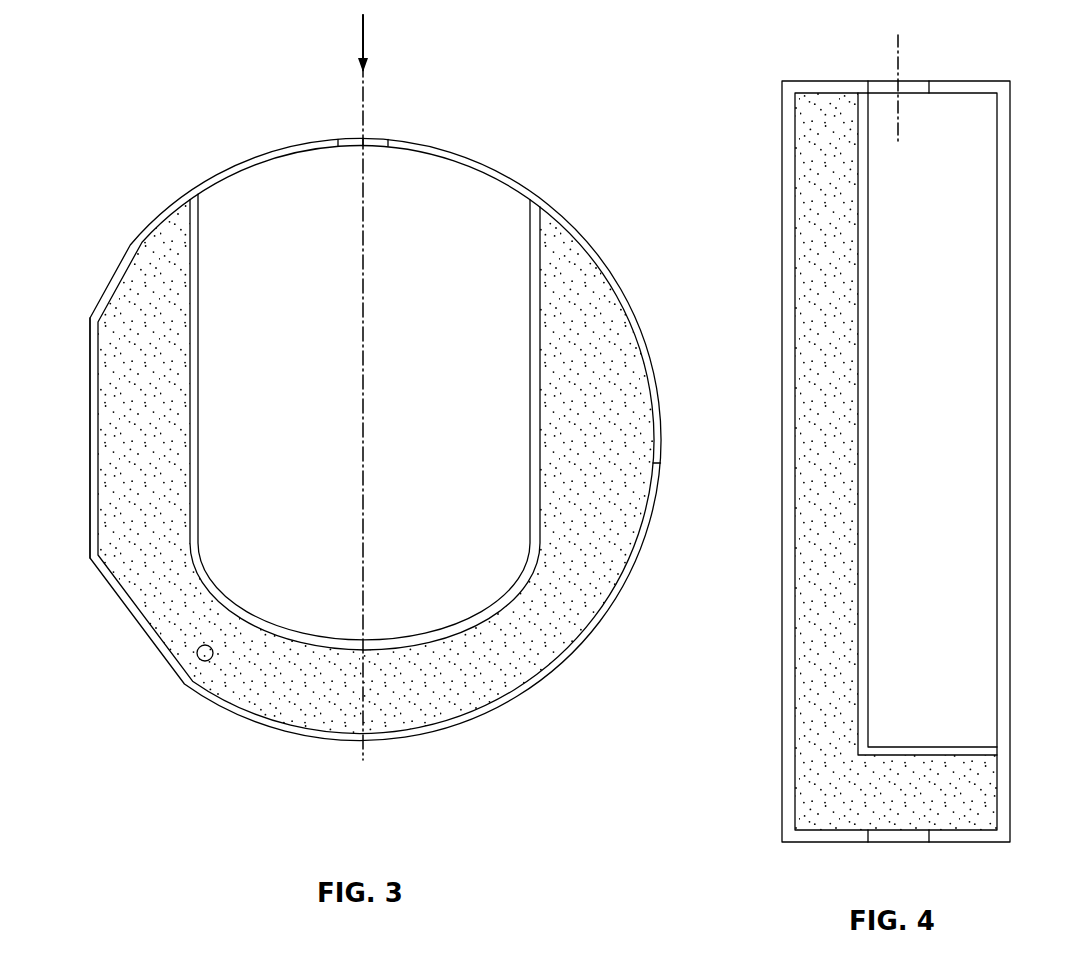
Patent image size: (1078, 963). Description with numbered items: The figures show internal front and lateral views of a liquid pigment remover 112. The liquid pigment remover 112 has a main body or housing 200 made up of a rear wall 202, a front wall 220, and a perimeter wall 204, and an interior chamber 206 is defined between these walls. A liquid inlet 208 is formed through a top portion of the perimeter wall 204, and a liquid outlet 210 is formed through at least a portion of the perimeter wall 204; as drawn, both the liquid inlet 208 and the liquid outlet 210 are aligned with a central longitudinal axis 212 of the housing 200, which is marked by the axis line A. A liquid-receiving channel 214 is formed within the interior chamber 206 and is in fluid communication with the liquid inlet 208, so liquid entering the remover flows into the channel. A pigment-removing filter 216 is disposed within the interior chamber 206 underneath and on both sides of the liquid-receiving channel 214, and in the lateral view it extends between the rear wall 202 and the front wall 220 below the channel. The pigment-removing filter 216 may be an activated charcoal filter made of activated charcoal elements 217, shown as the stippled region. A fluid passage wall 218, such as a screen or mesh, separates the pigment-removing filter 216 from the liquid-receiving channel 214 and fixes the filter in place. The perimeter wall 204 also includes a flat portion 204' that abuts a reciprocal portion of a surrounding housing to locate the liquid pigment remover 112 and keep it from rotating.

In FIG. 3, the liquid pigment remover 112 is at (132, 170).
In FIG. 4, the liquid pigment remover 112 is at (760, 42).
In FIG. 3, the housing 200 is at (573, 236).
In FIG. 4, the housing 200 is at (896, 461).
In FIG. 3, the rear wall 202 is at (245, 226).
In FIG. 4, the rear wall 202 is at (783, 440).
In FIG. 3, the perimeter wall 204 is at (633, 320).
In FIG. 3, the flat portion 204' is at (65, 438).
In FIG. 3, the interior chamber 206 is at (452, 188).
In FIG. 4, the interior chamber 206 is at (974, 344).
In FIG. 3, the liquid inlet 208 is at (340, 132).
In FIG. 4, the liquid inlet 208 is at (878, 74).
In FIG. 3, the liquid outlet 210 is at (410, 748).
In FIG. 4, the liquid outlet 210 is at (900, 843).
In FIG. 3, the central longitudinal axis 212 is at (365, 102).
In FIG. 4, the central longitudinal axis 212 is at (900, 50).
In FIG. 3, the liquid-receiving channel 214 is at (453, 226).
In FIG. 4, the liquid-receiving channel 214 is at (942, 226).
In FIG. 3, the pigment-removing filter 216 is at (662, 465).
In FIG. 4, the pigment-removing filter 216 is at (815, 566).
In FIG. 3, the activated charcoal elements 217 is at (595, 585).
In FIG. 4, the activated charcoal elements 217 is at (828, 225).
In FIG. 3, the fluid passage wall 218 is at (200, 416).
In FIG. 4, the front wall 220 is at (1012, 470).
In FIG. 3, the axis A is at (366, 44).